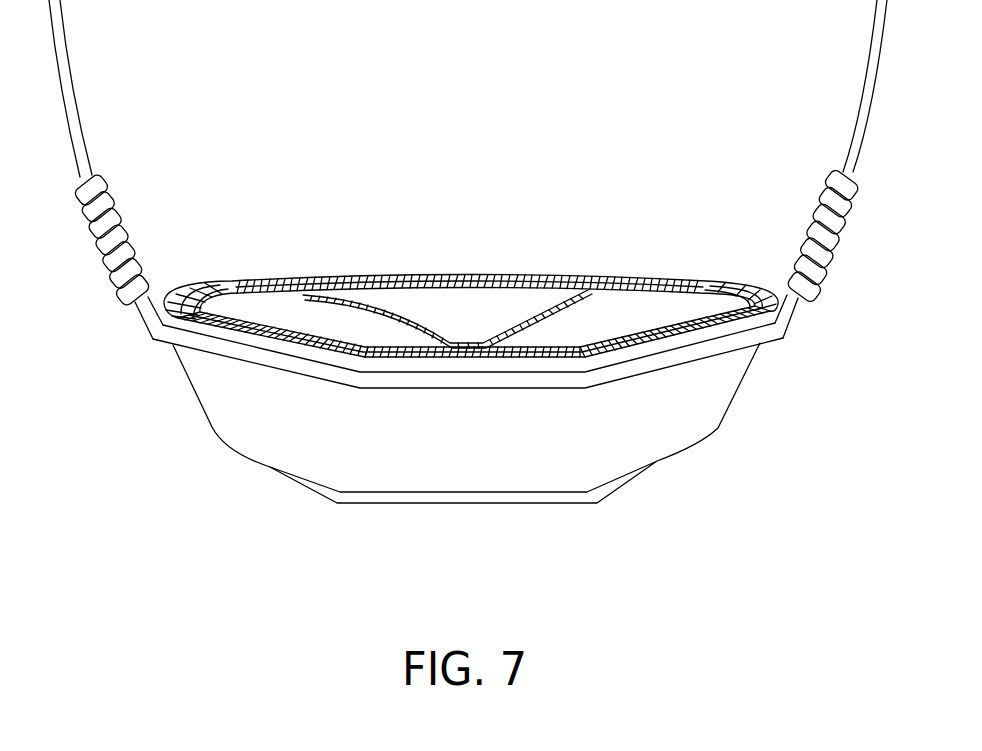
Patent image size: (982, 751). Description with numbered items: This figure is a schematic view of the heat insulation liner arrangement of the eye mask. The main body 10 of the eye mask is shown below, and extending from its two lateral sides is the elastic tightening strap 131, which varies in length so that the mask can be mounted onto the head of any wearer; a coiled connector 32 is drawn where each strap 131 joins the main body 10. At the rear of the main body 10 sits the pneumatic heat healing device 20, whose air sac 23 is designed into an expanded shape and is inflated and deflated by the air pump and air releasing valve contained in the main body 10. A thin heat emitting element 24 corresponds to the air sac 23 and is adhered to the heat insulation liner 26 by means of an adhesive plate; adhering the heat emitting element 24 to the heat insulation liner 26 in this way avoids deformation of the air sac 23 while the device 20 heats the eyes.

The main body 10 is at (652, 453).
The elastic tightening strap 131 is at (867, 74).
The coil spring connector 32 is at (825, 228).
The pneumatic heat healing device 20 is at (471, 264).
The air sac 23 is at (583, 288).
The heat emitting element 24 is at (630, 277).
The heat insulation liner 26 is at (452, 275).